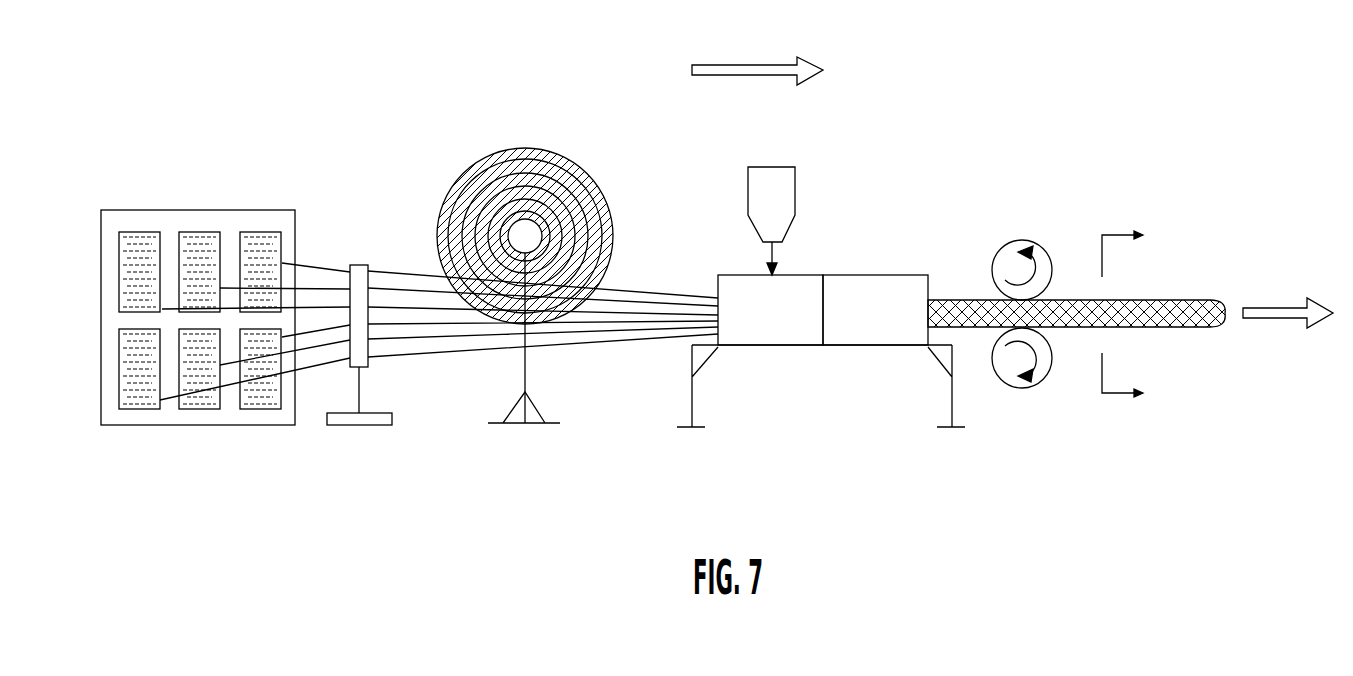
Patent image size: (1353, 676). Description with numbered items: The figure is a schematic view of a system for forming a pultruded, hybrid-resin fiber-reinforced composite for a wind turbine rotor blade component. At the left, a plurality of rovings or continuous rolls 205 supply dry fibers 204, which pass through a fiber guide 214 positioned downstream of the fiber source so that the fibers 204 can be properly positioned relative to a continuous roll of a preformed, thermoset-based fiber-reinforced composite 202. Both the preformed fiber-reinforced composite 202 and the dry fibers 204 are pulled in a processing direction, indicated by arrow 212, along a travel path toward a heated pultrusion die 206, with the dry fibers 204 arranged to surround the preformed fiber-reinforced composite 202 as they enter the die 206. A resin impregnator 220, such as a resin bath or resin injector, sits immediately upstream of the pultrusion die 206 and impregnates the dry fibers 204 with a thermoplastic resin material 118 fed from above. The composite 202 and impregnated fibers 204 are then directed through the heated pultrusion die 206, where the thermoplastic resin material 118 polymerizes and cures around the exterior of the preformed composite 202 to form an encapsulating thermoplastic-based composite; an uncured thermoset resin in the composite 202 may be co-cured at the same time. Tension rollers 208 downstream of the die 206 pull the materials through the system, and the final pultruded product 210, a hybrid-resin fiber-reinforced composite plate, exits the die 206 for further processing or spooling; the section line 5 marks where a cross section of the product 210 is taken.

The section line 5- 5 is at (1133, 316).
The thermoplastic resin material 118 is at (778, 195).
The preformed fiber-reinforced composite 202 is at (592, 174).
The dry fibers 204 is at (343, 305).
The continuous rolls of dry fibers 205 is at (272, 233).
The pultrusion die 206 is at (890, 321).
The tension rollers 208 is at (1022, 240).
The pultruded product 210 is at (1190, 300).
The processing direction arrow 212 is at (735, 65).
The fiber guide 214 is at (357, 264).
The resin impregnator 220 is at (788, 321).